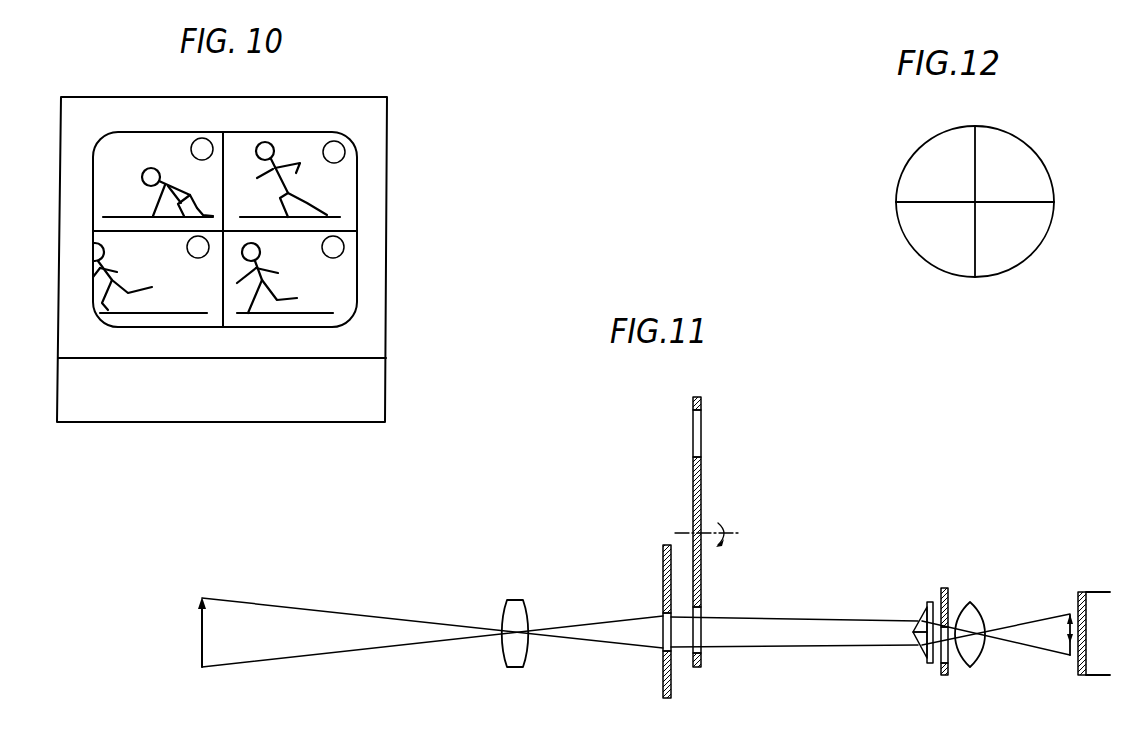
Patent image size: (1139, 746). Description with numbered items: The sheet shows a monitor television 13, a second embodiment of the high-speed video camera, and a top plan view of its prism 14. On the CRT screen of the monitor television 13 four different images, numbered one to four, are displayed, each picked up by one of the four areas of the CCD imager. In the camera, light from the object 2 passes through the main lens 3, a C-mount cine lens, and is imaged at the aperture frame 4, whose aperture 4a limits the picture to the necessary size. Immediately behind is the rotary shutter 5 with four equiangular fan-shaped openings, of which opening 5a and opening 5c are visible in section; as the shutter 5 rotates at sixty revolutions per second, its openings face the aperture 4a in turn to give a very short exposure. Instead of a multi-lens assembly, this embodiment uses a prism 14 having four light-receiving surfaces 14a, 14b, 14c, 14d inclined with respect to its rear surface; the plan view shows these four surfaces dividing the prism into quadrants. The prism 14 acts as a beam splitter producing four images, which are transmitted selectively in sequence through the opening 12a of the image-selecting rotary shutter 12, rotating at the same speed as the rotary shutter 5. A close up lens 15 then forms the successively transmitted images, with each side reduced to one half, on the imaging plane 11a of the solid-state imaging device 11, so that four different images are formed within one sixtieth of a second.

In FIG. 11, the object 2 is at (200, 633).
In FIG. 11, the main lens 3 is at (523, 612).
In FIG. 11, the aperture frame 4 is at (667, 545).
In FIG. 11, the aperture 4a is at (657, 628).
In FIG. 11, the rotary shutter 5 is at (702, 508).
In FIG. 11, the opening 5a is at (702, 632).
In FIG. 11, the opening 5c is at (702, 437).
In FIG. 11, the solid-state imaging device 11 is at (1103, 592).
In FIG. 11, the imaging plane 11a is at (1077, 602).
In FIG. 11, the image-selecting rotary shutter 12 is at (947, 588).
In FIG. 11, the opening 12a is at (942, 668).
In FIG. 10, the monitor television 13 is at (387, 233).
In FIG. 12, the prism 14 is at (1060, 212).
In FIG. 11, the prism 14 is at (928, 603).
In FIG. 12, the light-receiving surface 14a is at (920, 140).
In FIG. 12, the light-receiving surface 14b is at (1045, 157).
In FIG. 11, the light-receiving surface 14b is at (920, 613).
In FIG. 12, the light-receiving surface 14c is at (1023, 255).
In FIG. 11, the light-receiving surface 14c is at (920, 652).
In FIG. 12, the light-receiving surface 14d is at (932, 260).
In FIG. 11, the close up lens 15 is at (972, 603).